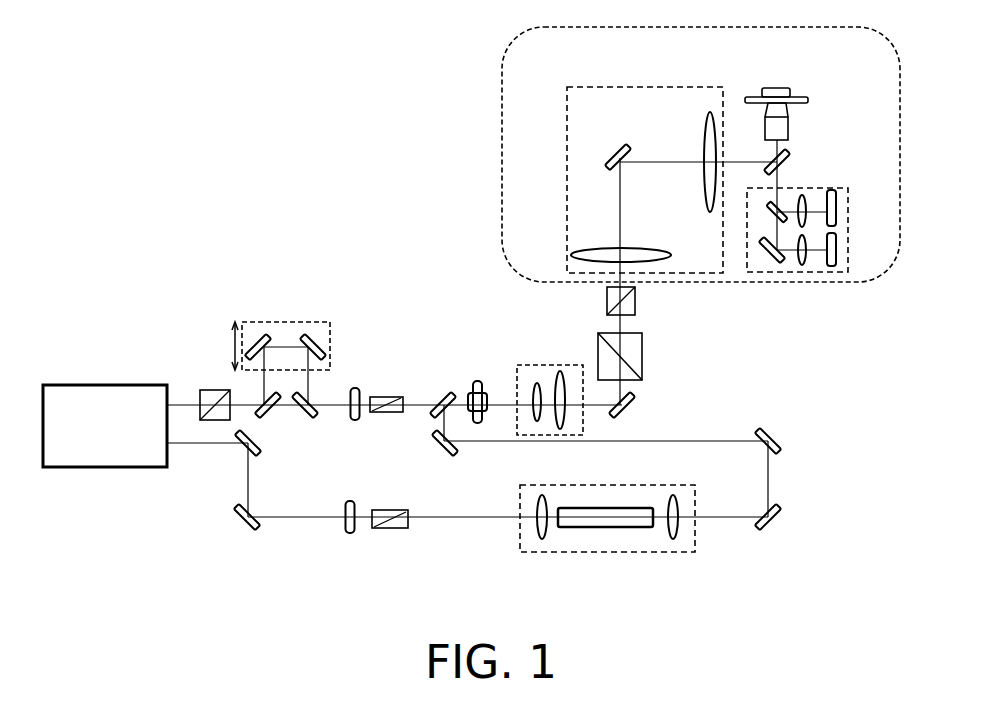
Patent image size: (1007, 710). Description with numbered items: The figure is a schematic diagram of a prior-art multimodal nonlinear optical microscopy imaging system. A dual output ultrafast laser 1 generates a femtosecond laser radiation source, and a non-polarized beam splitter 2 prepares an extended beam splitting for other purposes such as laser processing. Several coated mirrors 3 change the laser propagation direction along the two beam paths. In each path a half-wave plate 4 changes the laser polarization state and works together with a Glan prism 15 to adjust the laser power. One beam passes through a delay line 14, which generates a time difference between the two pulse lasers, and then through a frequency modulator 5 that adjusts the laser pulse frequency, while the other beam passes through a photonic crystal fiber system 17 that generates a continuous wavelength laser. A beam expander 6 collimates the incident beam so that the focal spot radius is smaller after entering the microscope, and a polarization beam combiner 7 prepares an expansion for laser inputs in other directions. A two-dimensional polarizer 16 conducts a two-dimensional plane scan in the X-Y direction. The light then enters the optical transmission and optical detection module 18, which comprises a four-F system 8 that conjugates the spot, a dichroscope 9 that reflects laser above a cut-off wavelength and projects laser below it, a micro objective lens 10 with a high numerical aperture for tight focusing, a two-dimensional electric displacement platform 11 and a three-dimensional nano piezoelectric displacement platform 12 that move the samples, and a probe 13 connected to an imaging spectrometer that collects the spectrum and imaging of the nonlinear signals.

The dual output ultrafast laser 1 is at (100, 383).
The non-polarized beam splitter 2 is at (203, 390).
The coated mirror 3 is at (272, 416).
The half-wave plate 4 is at (357, 420).
The frequency modulator 5 is at (477, 380).
The beam expander 6 is at (547, 365).
The polarization beam combiner 7 is at (637, 305).
The 4F system 8 is at (645, 87).
The dichroscope 9 is at (438, 395).
The micro objective lens 10 is at (790, 122).
The 2D electric displacement platform 11 is at (752, 97).
The 3D nano piezoelectric displacement platform 12 is at (788, 88).
The probe 13 is at (810, 275).
The delay line 14 is at (330, 345).
The Glan prism 15 is at (385, 413).
The 2D polarizer 16 is at (644, 360).
The photonic crystal fiber system 17 is at (607, 534).
The optical transmission and optical detection module 18 is at (724, 154).